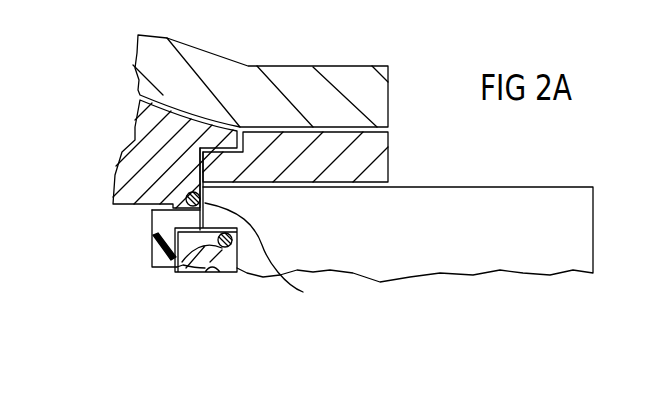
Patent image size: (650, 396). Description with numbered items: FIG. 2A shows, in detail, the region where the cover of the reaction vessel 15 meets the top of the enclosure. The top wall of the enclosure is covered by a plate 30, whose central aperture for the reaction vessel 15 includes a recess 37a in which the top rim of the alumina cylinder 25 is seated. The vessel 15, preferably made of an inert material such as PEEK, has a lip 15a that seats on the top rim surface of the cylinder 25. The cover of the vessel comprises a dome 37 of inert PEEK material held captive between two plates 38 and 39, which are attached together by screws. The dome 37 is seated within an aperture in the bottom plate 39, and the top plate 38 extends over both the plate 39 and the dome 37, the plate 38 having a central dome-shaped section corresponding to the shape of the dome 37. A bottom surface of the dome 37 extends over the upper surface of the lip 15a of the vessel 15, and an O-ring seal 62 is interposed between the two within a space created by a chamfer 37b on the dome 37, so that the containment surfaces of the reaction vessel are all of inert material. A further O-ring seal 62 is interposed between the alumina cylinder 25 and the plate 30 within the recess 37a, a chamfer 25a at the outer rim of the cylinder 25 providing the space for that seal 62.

The top plate 38 is at (295, 80).
The bottom plate 39 is at (362, 146).
The dome 37 is at (137, 132).
The recess 37a is at (232, 247).
The chamfer 37b is at (187, 197).
The plate 30 is at (502, 202).
The reaction vessel 15 is at (158, 264).
The lip 15a is at (187, 216).
The alumina cylinder 25 is at (193, 247).
The chamfer 25a is at (195, 266).
The O-ring seal 62 is at (274, 257).